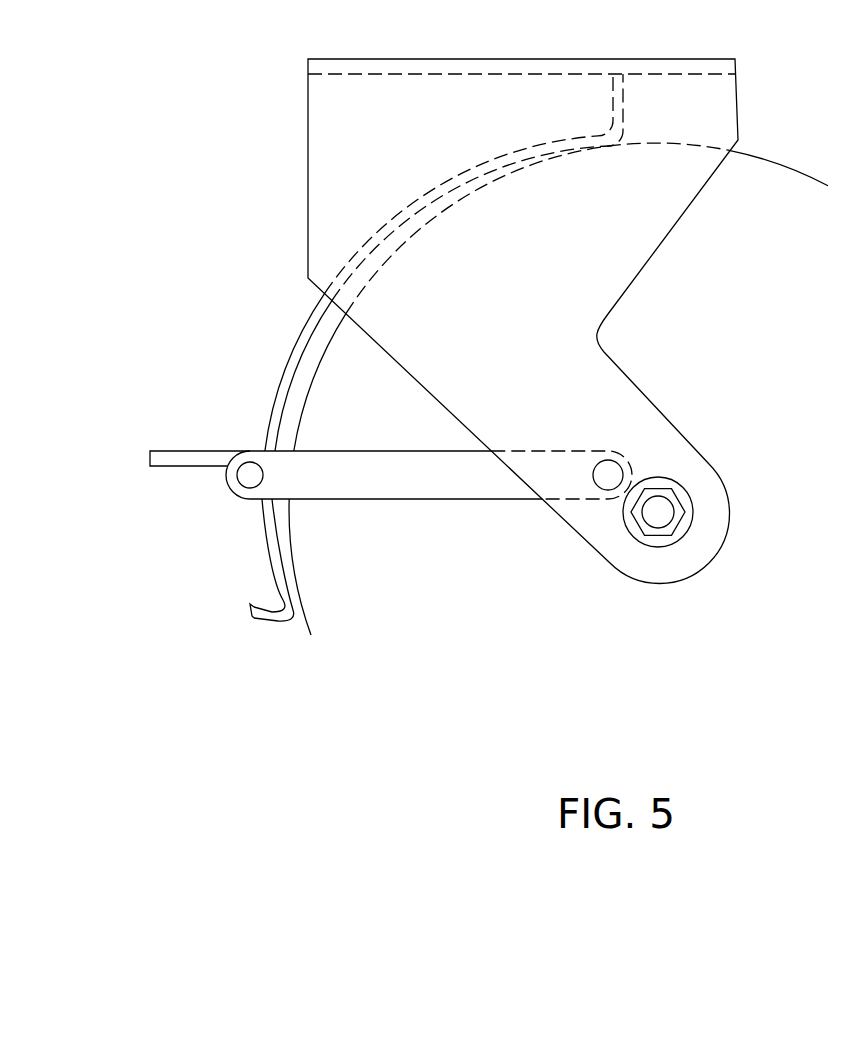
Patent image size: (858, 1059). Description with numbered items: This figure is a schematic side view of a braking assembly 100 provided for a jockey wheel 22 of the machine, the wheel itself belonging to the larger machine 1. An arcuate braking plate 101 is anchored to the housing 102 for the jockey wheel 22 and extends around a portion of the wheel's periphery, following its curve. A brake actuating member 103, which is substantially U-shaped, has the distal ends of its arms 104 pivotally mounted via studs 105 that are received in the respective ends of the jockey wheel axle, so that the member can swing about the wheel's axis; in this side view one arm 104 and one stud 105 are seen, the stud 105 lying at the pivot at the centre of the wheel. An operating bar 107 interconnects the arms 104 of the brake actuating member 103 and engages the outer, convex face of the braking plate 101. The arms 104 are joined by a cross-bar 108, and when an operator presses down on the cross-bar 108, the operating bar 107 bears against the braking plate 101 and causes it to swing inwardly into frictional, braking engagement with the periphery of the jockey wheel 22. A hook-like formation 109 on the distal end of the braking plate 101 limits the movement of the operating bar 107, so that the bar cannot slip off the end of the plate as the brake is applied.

The bicycle 1 is at (794, 387).
The jockey wheel 22 is at (465, 671).
The braking assembly 100 is at (230, 185).
The arcuate braking plate 101 is at (292, 337).
The housing 102 is at (380, 128).
The brake actuating member 103 is at (224, 515).
The arm 104 is at (417, 478).
The stud 105 is at (663, 516).
The operating bar 107 is at (250, 472).
The cross-bar 108 is at (188, 458).
The hook-like formation 109 is at (273, 613).